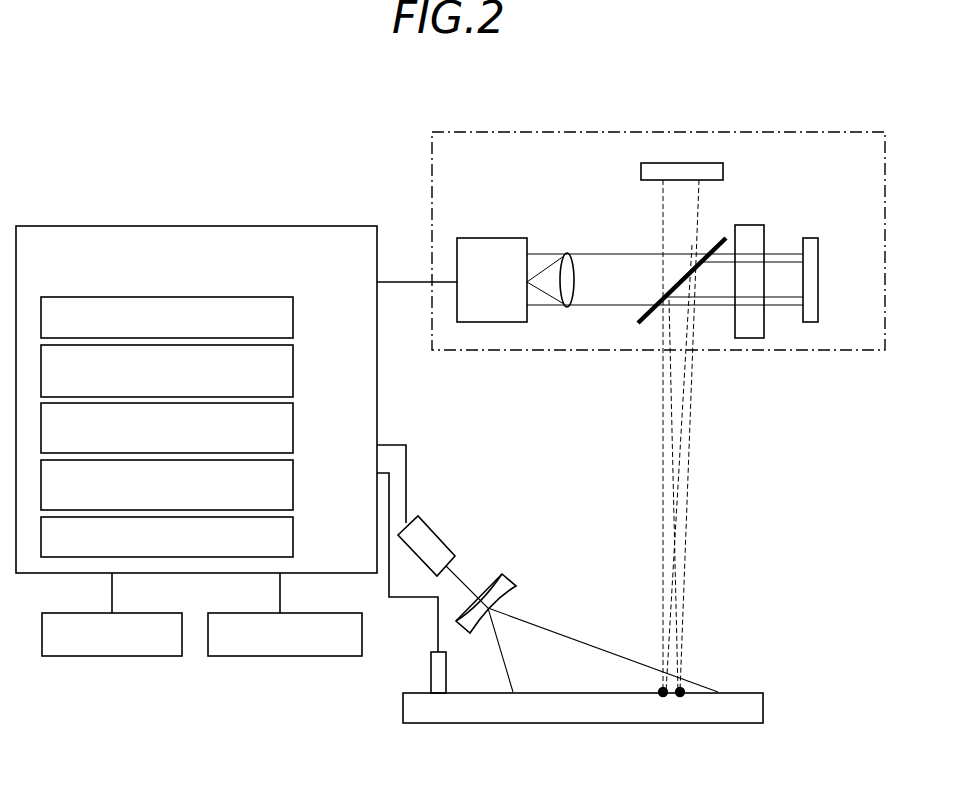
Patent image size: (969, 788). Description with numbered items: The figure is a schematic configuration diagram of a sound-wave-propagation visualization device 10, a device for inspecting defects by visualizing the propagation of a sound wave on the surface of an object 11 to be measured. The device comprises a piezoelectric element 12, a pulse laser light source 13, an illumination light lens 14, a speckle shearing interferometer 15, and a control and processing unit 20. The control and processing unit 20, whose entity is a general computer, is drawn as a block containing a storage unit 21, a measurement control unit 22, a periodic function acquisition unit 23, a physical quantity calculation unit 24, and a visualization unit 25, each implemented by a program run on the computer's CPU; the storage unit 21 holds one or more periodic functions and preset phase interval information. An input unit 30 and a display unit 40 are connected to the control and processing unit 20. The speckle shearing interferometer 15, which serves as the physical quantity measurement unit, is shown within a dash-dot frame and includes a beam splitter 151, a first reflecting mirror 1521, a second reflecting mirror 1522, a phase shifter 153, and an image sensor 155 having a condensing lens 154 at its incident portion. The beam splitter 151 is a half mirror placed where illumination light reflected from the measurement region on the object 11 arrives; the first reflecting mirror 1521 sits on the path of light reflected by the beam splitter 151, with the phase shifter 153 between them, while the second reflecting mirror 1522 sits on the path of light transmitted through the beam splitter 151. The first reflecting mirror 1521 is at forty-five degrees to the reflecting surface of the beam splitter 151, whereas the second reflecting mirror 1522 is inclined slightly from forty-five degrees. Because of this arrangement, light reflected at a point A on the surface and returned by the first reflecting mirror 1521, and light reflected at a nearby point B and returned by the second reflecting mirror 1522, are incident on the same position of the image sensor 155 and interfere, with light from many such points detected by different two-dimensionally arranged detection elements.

The sound-wave-propagation visualization device 10 is at (286, 166).
The object to be measured 11 is at (765, 706).
The piezoelectric element 12 is at (431, 668).
The pulse laser light source 13 is at (438, 535).
The illumination light lens 14 is at (512, 577).
The speckle shearing interferometer 15 is at (783, 352).
The beam splitter 151 is at (726, 234).
The phase shifter 153 is at (757, 225).
The condensing lens 154 is at (570, 254).
The image sensor 155 is at (510, 238).
The first reflecting mirror 1521 is at (812, 238).
The second reflecting mirror 1522 is at (641, 170).
The control and processing unit 20 is at (378, 386).
The storage unit 21 is at (295, 318).
The measurement control unit 22 is at (295, 374).
The periodic function acquisition unit 23 is at (295, 423).
The physical quantity calculation unit 24 is at (295, 480).
The visualization unit 25 is at (295, 533).
The input unit 30 is at (160, 657).
The display unit 40 is at (320, 657).
The point A is at (684, 700).
The point B is at (659, 697).